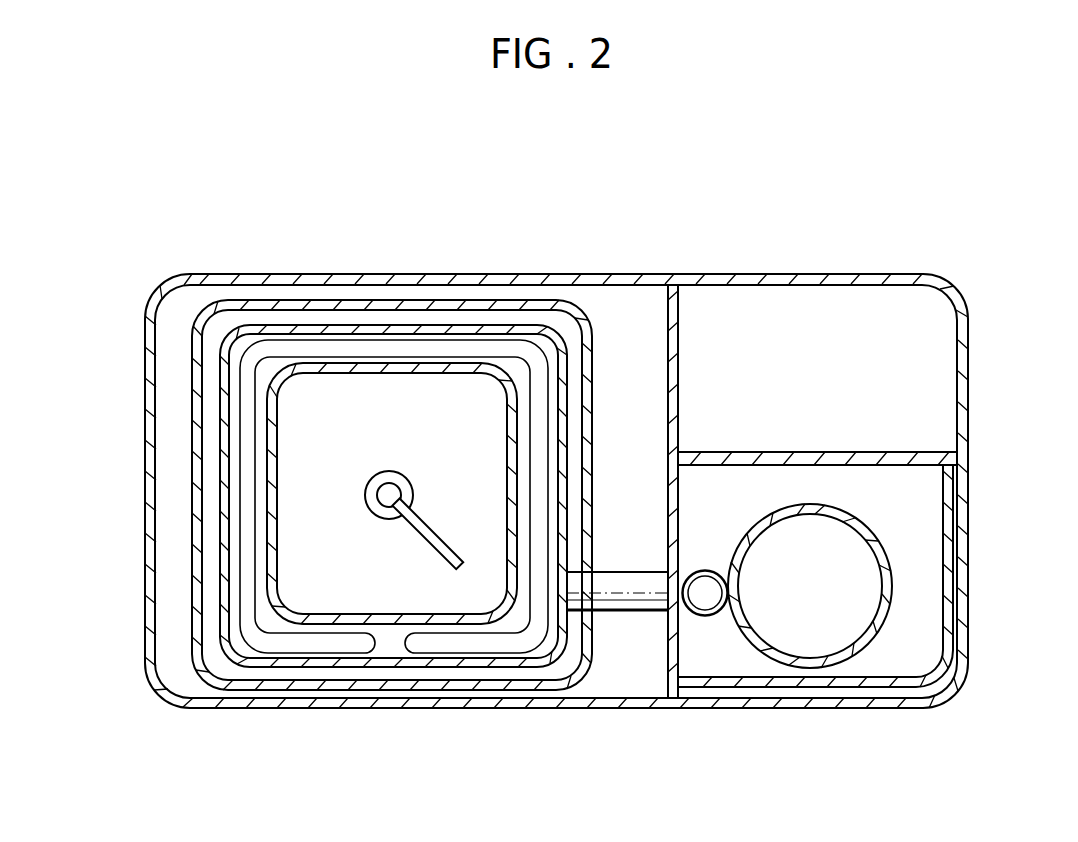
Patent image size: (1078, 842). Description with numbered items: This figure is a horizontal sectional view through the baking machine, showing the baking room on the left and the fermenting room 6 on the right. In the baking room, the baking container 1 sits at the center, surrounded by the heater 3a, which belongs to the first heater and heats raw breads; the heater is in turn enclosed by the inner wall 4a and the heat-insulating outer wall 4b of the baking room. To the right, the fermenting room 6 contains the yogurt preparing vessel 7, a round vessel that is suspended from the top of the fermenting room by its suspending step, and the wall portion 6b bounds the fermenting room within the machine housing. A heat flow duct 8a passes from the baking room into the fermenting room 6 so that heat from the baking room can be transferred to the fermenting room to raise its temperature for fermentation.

The baking container 1 is at (468, 622).
The heater 3a is at (333, 645).
The inner wall 4a is at (237, 655).
The heat-insulating outer wall 4b is at (200, 610).
The fermenting room 6 is at (927, 607).
The compartment wall 6b is at (955, 670).
The yogurt preparing vessel 7 is at (880, 548).
The heat flow duct 8a is at (632, 597).